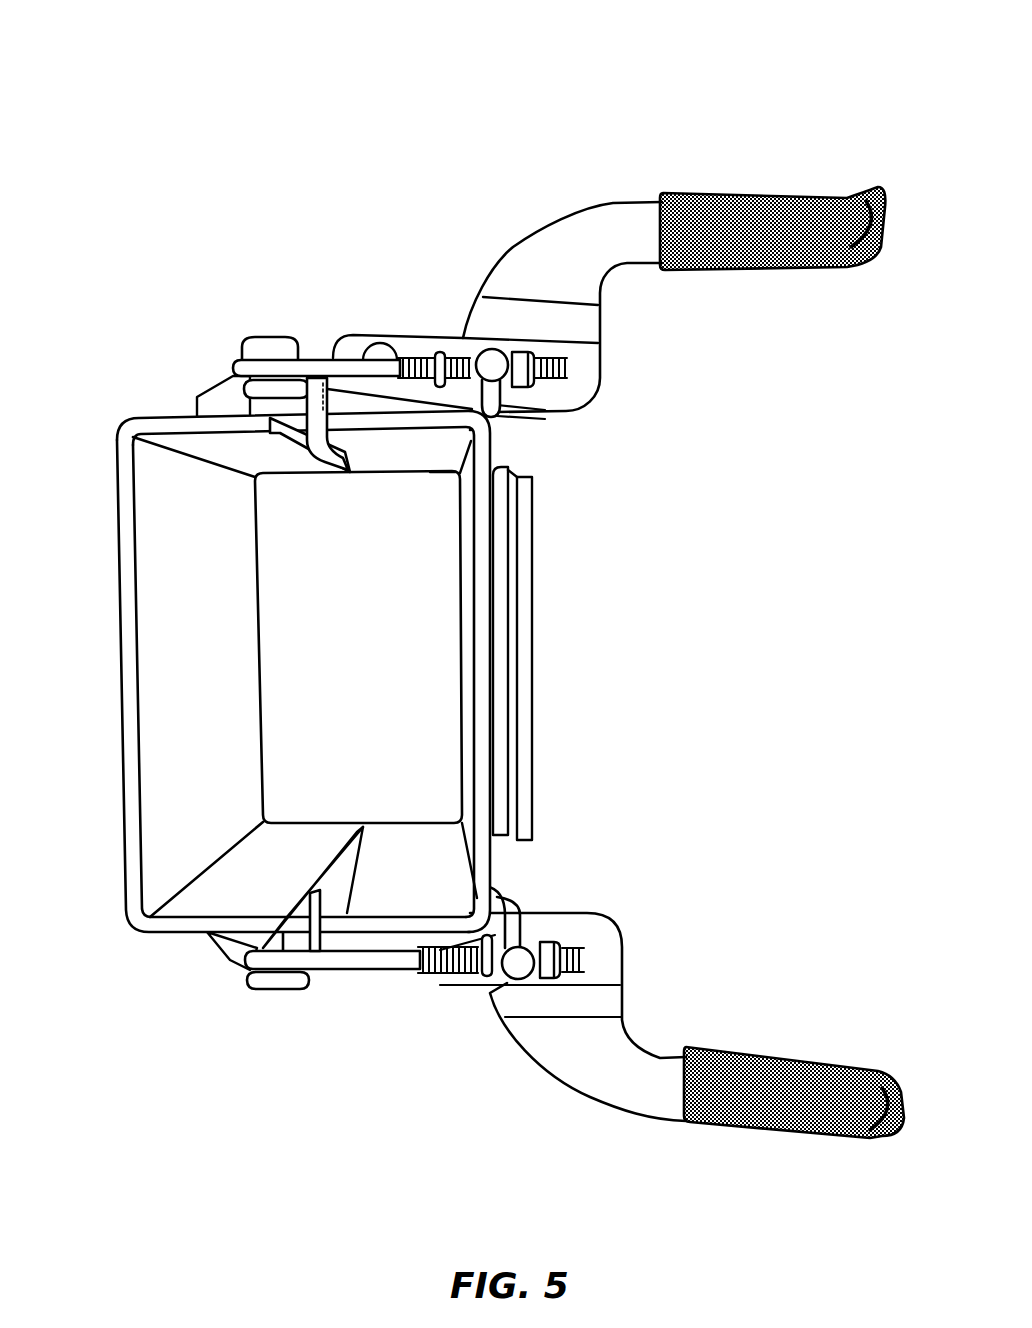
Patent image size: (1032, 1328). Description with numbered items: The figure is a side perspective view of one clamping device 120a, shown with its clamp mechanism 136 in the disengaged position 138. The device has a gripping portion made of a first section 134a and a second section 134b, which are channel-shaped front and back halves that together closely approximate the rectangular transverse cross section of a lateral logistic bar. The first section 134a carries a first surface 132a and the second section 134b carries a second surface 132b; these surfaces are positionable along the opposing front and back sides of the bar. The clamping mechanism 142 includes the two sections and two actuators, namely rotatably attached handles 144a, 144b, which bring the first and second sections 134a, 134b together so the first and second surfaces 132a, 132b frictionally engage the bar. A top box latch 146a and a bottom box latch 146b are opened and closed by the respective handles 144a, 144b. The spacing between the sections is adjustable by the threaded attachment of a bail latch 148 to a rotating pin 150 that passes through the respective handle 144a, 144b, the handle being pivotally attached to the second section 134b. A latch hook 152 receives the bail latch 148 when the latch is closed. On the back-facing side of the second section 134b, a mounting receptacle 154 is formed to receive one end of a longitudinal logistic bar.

The clamping device 120a is at (356, 586).
The first surface 132a is at (196, 705).
The second surface 132b is at (435, 654).
The first section 134a is at (133, 944).
The second section 134b is at (480, 444).
The clamp mechanism 136 is at (352, 338).
The disengaged position 138 is at (297, 302).
The clamping mechanism 142 is at (172, 234).
The handle 144a is at (785, 212).
The handle 144b is at (802, 1110).
The top box latch 146a is at (213, 350).
The bottom box latch 146b is at (340, 992).
The bail latch 148 is at (325, 362).
The rotating pin 150 is at (492, 365).
The latch hook 152 is at (233, 343).
The mounting receptacle 154 is at (515, 660).